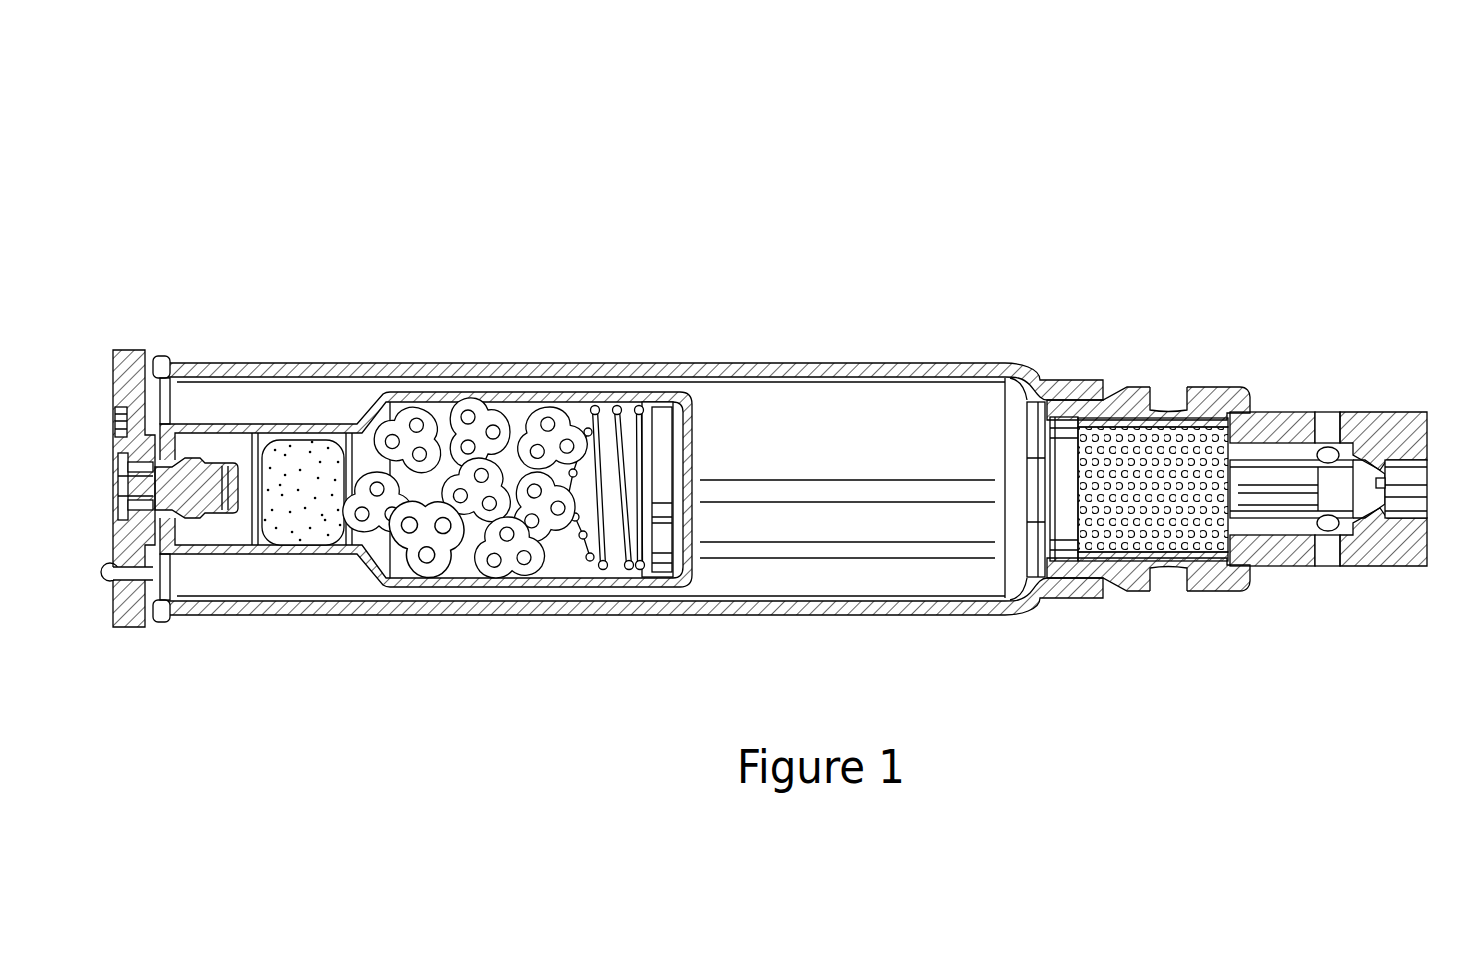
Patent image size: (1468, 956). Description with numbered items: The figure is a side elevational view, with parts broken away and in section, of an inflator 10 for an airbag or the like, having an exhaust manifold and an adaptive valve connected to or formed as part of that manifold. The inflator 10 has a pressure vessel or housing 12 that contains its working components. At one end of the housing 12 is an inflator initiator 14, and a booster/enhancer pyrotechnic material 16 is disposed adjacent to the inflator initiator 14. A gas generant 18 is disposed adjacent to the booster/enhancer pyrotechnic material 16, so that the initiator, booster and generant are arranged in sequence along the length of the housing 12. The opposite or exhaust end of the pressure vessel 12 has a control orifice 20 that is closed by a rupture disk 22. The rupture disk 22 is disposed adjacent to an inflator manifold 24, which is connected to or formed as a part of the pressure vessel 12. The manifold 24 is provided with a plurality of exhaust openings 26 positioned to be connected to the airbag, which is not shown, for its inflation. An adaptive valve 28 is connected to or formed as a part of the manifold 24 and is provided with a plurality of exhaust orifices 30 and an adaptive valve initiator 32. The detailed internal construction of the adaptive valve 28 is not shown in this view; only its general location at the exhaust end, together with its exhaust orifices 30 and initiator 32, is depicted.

The inflator 10 is at (243, 170).
The pressure vessel or housing 12 is at (221, 363).
The inflator initiator 14 is at (222, 500).
The booster/enhancer pyrotechnic material 16 is at (305, 437).
The gas generant 18 is at (518, 565).
The control orifice 20 is at (1032, 487).
The rupture disk 22 is at (1040, 400).
The inflator manifold 24 is at (1123, 593).
The exhaust openings 26 is at (1167, 398).
The adaptive valve 28 is at (1278, 567).
The exhaust orifices 30 is at (1328, 418).
The adaptive valve initiator 32 is at (1365, 500).